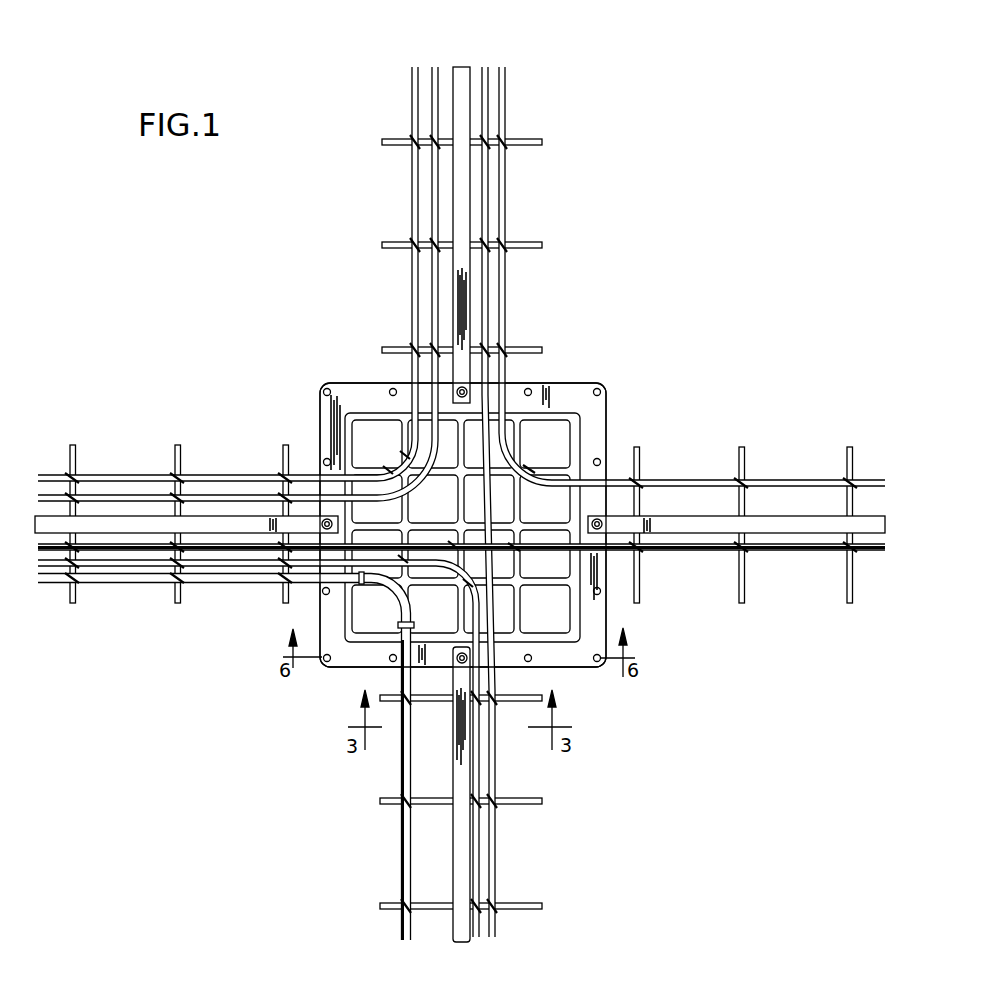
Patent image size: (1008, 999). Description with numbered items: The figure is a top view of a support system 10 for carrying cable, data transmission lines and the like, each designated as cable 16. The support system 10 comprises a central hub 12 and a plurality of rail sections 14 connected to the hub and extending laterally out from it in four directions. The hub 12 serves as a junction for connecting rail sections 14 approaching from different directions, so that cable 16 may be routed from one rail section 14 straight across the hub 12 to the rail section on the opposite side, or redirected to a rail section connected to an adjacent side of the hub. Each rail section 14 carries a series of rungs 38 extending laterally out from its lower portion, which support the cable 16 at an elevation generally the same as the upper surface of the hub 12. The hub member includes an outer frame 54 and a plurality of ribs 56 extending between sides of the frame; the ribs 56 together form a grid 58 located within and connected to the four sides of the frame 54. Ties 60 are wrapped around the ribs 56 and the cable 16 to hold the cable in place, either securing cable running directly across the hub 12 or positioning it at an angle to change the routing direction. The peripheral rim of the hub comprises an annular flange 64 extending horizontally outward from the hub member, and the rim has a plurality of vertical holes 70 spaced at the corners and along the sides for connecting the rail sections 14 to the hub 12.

The support system 10 is at (626, 368).
The hub 12 is at (608, 416).
The rail section 14 is at (465, 67).
The cable 16 is at (433, 188).
The rung 38 is at (542, 142).
The outer frame 54 is at (347, 442).
The rib 56 is at (566, 520).
The grid 58 is at (522, 590).
The tie 60 is at (530, 468).
The annular flange 64 is at (335, 627).
The vertical hole 70 is at (393, 389).